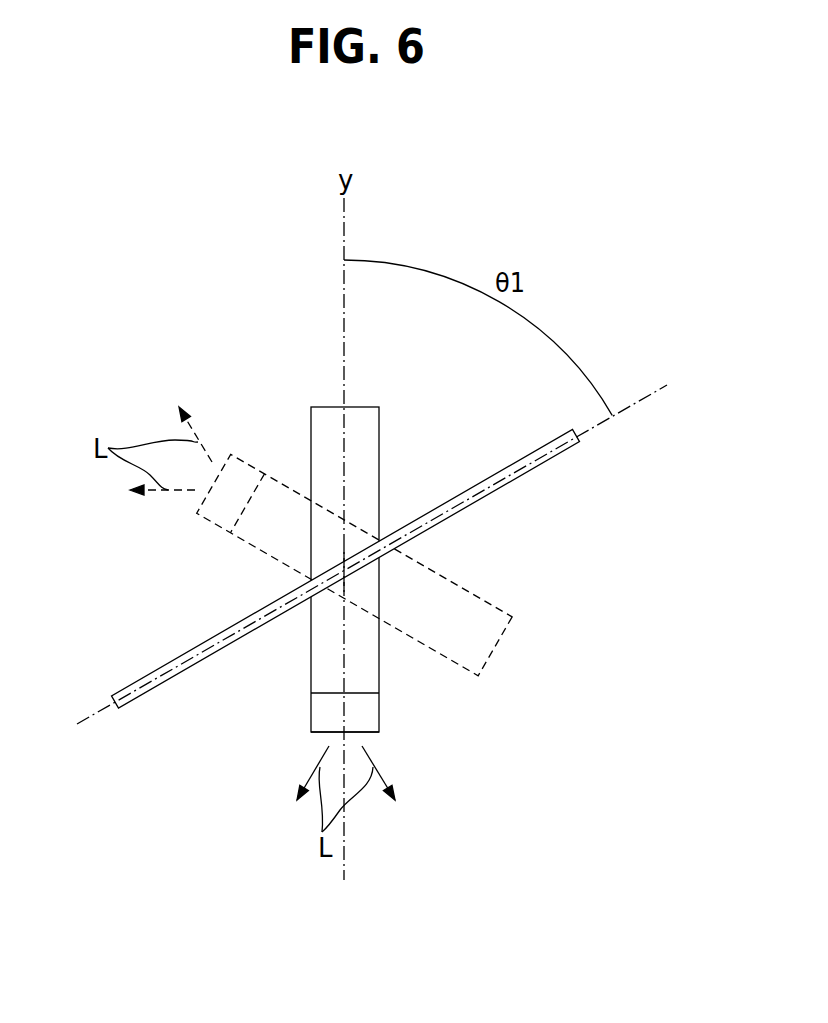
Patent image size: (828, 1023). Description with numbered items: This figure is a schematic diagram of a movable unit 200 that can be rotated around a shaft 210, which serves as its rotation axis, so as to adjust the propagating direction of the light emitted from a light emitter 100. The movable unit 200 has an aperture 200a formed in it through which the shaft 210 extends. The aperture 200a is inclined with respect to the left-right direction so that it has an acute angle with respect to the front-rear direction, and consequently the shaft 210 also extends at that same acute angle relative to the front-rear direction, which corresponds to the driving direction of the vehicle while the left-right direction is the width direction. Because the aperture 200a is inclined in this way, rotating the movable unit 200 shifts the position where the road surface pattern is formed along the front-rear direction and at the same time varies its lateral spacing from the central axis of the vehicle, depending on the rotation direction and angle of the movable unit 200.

The light emitter 100 is at (370, 720).
The movable unit 200 is at (362, 407).
The aperture 200a is at (390, 534).
The shaft 210 is at (543, 463).